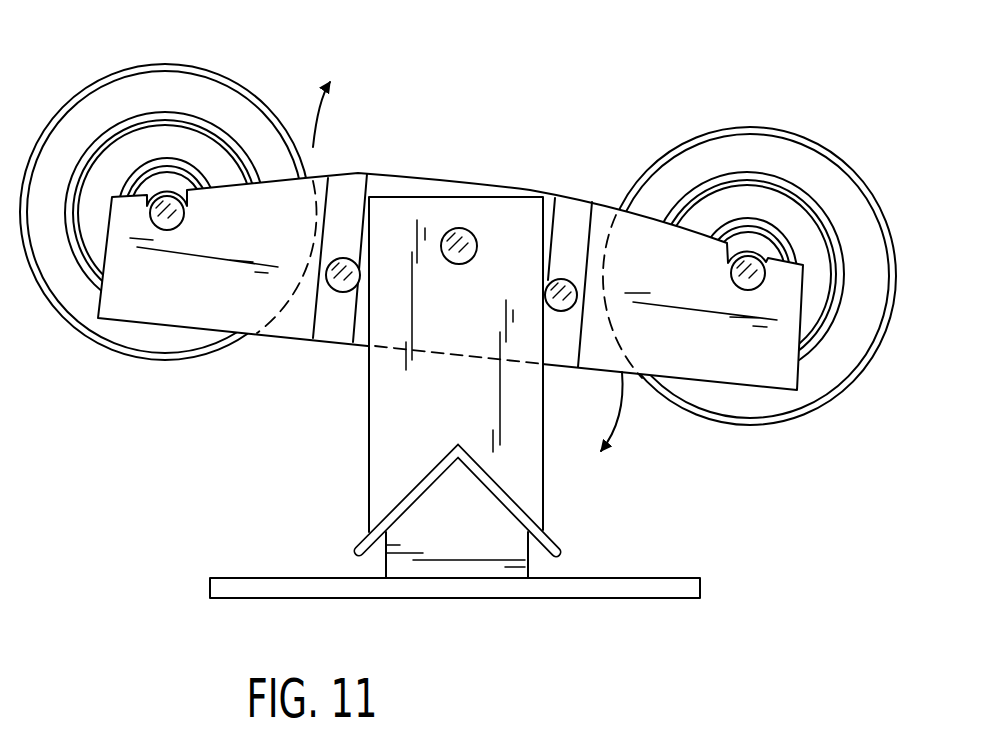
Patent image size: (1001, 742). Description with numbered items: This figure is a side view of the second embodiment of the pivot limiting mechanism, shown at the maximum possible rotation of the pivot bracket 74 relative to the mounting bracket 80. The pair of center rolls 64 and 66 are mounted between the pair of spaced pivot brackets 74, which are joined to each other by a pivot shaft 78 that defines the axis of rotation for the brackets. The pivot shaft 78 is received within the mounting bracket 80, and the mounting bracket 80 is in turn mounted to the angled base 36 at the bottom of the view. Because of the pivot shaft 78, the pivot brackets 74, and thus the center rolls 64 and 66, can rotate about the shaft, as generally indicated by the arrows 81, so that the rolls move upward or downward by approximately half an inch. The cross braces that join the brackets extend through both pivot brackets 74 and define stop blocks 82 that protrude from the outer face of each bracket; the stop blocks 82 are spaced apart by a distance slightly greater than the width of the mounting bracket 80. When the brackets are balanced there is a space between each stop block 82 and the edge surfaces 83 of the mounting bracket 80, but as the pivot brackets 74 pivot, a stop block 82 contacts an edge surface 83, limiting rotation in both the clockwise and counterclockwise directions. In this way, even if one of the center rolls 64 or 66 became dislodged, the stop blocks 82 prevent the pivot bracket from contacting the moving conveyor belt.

The center roll 64 is at (88, 108).
The center roll 66 is at (717, 158).
The pivot bracket 74 is at (183, 307).
The pivot shaft 78 is at (462, 228).
The mounting bracket 80 is at (402, 432).
The arrows 81 is at (320, 118).
The stop block 82 is at (345, 292).
The edge surface 83 is at (543, 488).
The angled base 36 is at (551, 529).